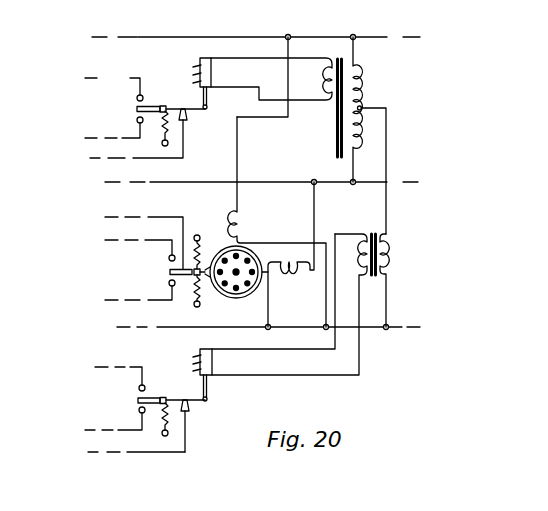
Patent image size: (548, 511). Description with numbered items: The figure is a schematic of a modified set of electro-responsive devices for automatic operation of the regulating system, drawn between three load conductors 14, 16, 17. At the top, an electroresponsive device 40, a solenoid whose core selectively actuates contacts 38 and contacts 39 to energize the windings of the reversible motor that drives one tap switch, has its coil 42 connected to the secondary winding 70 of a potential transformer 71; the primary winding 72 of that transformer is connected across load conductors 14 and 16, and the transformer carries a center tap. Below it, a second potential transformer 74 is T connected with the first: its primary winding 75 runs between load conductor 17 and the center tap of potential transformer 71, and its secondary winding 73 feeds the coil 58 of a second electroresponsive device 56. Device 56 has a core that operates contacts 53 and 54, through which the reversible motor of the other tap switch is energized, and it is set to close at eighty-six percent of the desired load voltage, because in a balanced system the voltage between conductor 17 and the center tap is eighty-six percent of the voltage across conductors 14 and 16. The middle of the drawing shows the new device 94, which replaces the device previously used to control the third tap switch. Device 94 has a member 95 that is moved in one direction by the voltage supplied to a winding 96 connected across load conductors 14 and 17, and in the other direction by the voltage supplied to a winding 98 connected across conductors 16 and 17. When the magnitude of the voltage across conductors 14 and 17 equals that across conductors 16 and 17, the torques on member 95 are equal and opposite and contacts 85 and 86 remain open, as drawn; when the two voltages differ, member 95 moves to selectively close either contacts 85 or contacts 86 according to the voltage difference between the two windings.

The load conductor 14 is at (383, 37).
The load conductor 16 is at (391, 183).
The load conductor 17 is at (388, 330).
The contacts 38 is at (137, 120).
The contacts 39 is at (137, 97).
The electroresponsive device 40 is at (240, 112).
The coil 42 is at (212, 70).
The contacts 53 is at (139, 410).
The contacts 54 is at (139, 388).
The electroresponsive device 56 is at (242, 399).
The coil 58 is at (212, 359).
The secondary winding 70 is at (326, 76).
The potential transformer 71 is at (333, 137).
The primary winding 72 is at (362, 72).
The secondary winding 73 is at (359, 246).
The potential transformer 74 is at (382, 304).
The primary winding 75 is at (387, 247).
The contacts 85 is at (169, 284).
The contacts 86 is at (169, 258).
The electroresponsive device 94 is at (231, 299).
The member 95 is at (277, 236).
The winding 96 is at (230, 214).
The winding 98 is at (291, 254).